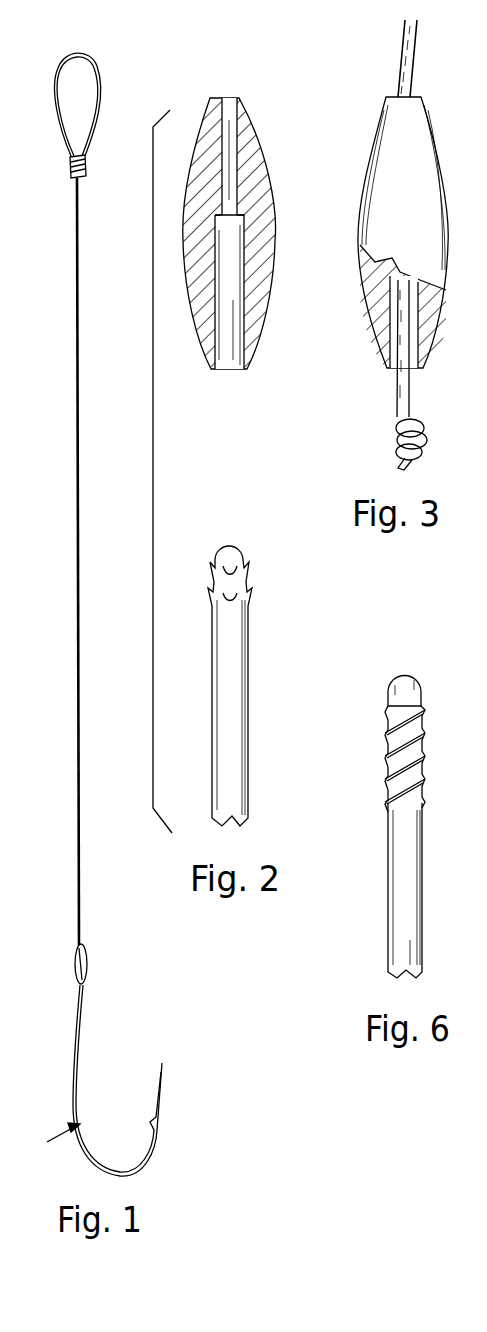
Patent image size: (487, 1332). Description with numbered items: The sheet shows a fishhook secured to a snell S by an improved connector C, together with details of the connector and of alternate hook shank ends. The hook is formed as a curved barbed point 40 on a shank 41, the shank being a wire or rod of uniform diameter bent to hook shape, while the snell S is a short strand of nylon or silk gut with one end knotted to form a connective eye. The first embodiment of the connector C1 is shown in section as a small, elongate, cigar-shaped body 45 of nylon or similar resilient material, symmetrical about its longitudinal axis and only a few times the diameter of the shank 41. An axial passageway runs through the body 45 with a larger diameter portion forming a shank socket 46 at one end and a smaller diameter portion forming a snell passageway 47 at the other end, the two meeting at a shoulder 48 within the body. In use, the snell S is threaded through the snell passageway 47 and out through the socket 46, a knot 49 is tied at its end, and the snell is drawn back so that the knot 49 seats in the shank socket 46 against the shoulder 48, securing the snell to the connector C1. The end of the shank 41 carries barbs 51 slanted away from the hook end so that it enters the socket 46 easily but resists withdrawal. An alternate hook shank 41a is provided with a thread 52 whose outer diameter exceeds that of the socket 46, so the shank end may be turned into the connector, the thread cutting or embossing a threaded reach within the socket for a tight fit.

In FIG. 1, the snell S is at (77, 622).
In FIG. 3, the snell S is at (405, 73).
In FIG. 1, the connector C is at (89, 964).
In FIG. 2, the connector C1 is at (248, 225).
In FIG. 3, the connector C1 is at (419, 226).
In FIG. 1, the curved barbed point 40 is at (163, 1137).
In FIG. 1, the shank 41 is at (82, 1008).
In FIG. 2, the shank 41 is at (228, 693).
In FIG. 6, the hook shank 41a is at (408, 839).
In FIG. 2, the body 45 is at (262, 181).
In FIG. 3, the body 45 is at (438, 181).
In FIG. 2, the shank socket 46 is at (232, 261).
In FIG. 3, the shank socket 46 is at (415, 319).
In FIG. 2, the snell passageway 47 is at (230, 149).
In FIG. 2, the shoulder 48 is at (258, 198).
In FIG. 3, the knot 49 is at (414, 420).
In FIG. 2, the barbs 51 is at (250, 600).
In FIG. 6, the thread 52 is at (385, 732).